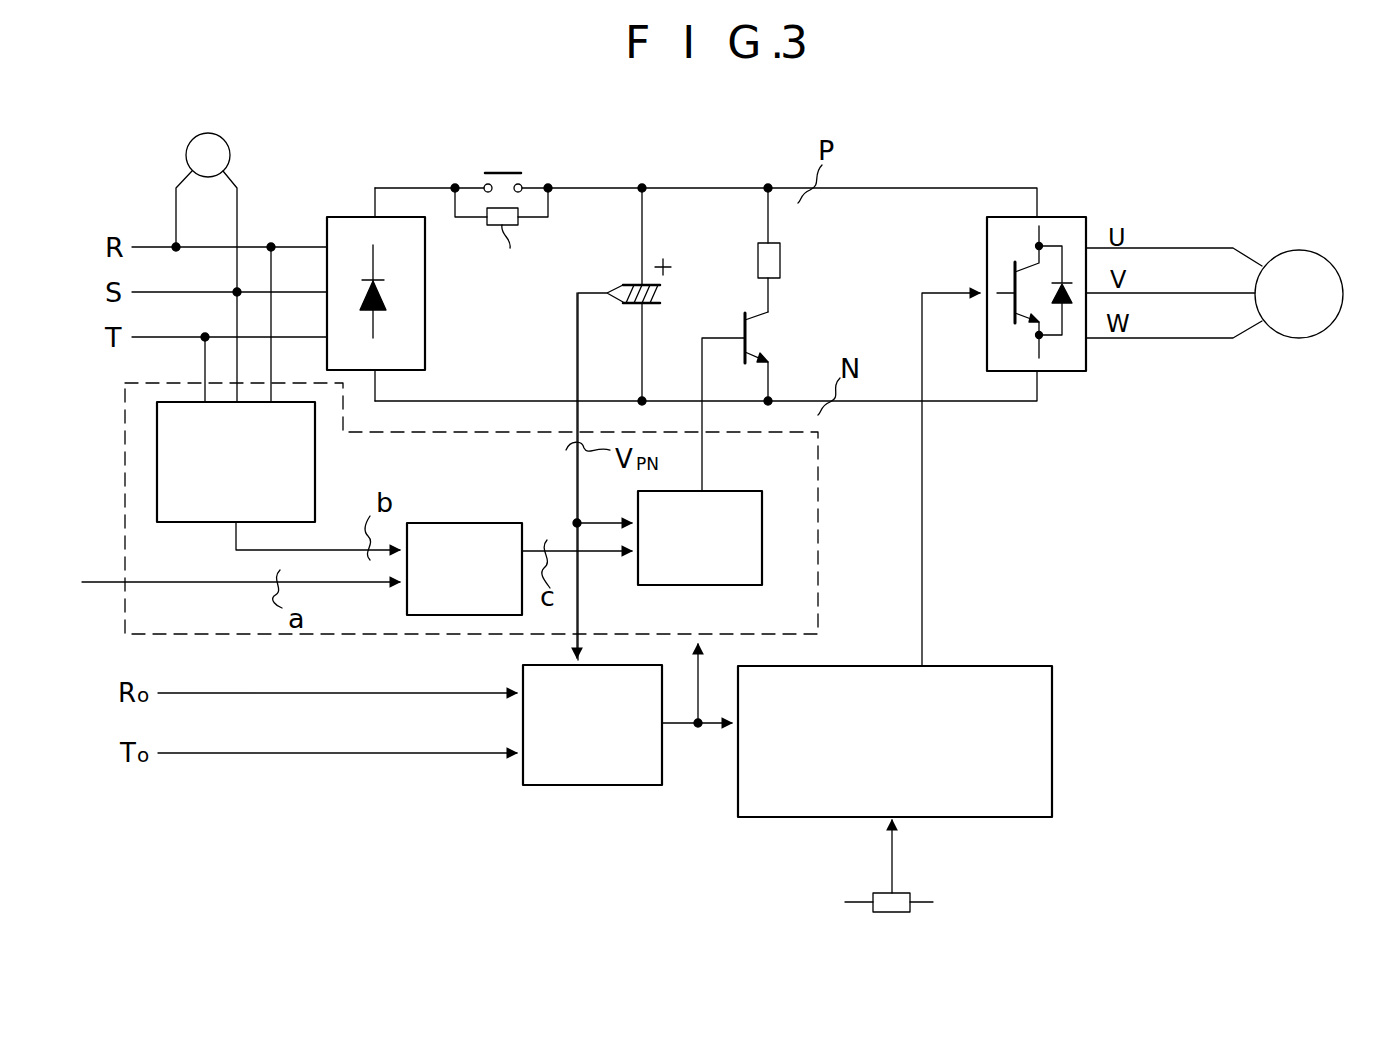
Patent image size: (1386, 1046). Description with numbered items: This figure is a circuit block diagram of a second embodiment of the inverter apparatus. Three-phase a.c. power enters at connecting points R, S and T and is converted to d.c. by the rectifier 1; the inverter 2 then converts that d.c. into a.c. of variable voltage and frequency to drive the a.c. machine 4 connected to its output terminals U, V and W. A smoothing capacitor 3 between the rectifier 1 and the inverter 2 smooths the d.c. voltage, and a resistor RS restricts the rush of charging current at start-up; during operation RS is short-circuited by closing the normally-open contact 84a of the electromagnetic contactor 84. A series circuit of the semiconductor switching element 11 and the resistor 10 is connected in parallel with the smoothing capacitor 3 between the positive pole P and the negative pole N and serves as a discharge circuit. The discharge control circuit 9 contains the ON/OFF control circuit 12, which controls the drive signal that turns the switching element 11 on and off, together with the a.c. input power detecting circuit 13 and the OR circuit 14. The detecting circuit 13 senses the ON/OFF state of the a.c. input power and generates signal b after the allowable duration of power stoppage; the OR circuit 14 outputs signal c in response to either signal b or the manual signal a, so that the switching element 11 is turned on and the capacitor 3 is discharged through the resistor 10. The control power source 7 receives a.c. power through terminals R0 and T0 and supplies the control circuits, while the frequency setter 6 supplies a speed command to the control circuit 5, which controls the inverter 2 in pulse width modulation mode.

The rectifier 1 is at (350, 213).
The inverter 2 is at (1070, 216).
The smoothing capacitor 3 is at (632, 278).
The a.c. machine 4 is at (1340, 272).
The control circuit 5 is at (1052, 712).
The frequency setter 6 is at (906, 893).
The control power source 7 is at (617, 785).
The discharge control circuit 9 is at (125, 456).
The resistor 10 is at (780, 252).
The semiconductor switching element 11 is at (773, 333).
The ON/OFF control circuit 12 is at (742, 491).
The a.c. input power detecting circuit 13 is at (315, 468).
The OR circuit 14 is at (487, 522).
The electromagnetic contactor 84 is at (229, 150).
The normally-open contact 84a is at (501, 209).